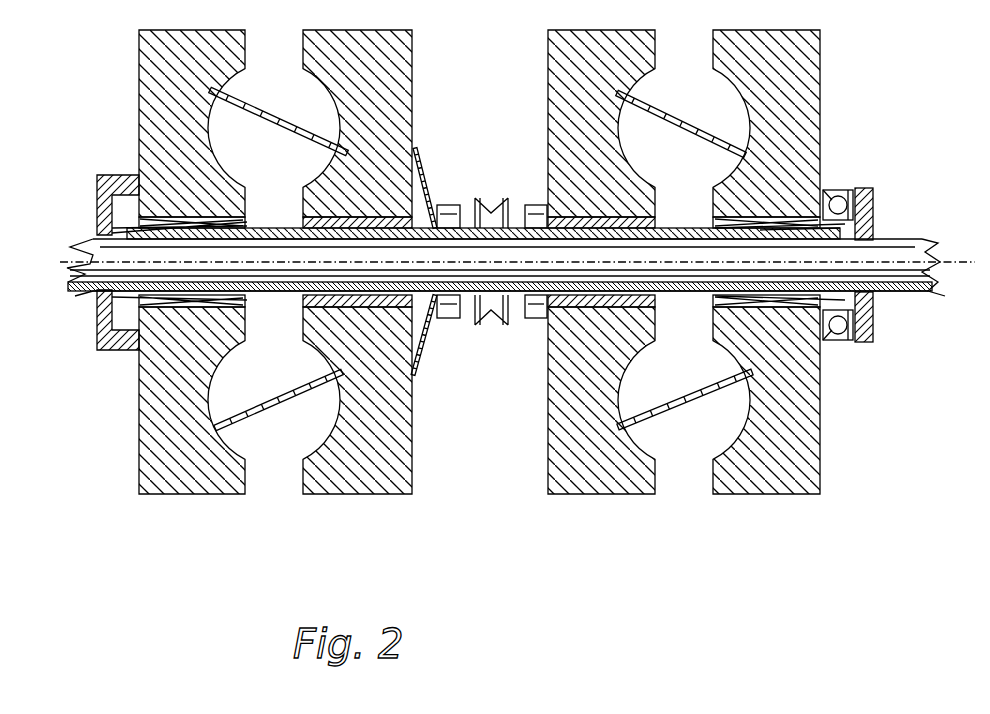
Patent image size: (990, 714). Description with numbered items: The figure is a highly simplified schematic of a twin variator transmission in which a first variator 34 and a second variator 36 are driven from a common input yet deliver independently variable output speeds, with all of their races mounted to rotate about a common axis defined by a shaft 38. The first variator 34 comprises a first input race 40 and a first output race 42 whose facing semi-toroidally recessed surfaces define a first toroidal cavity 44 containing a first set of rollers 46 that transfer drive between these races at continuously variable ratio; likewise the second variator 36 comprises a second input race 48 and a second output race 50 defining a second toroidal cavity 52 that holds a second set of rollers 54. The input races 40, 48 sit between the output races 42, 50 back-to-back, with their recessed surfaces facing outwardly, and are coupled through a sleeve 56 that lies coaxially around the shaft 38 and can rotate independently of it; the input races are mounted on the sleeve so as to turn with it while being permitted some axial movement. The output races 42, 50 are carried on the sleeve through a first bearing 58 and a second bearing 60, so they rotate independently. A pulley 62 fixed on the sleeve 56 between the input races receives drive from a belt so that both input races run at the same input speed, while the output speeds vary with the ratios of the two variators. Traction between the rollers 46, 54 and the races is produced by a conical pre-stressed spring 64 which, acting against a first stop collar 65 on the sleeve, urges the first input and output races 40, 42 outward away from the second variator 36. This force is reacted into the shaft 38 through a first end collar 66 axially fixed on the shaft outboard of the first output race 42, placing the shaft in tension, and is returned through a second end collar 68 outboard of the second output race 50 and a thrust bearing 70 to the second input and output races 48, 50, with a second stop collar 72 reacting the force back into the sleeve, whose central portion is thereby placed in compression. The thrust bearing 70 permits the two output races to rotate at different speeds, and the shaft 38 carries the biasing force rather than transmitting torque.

The first variator 34 is at (277, 494).
The second variator 36 is at (683, 484).
The shaft 38 is at (928, 274).
The first input race 40 is at (408, 496).
The first output race 42 is at (210, 496).
The first toroidal cavity 44 is at (240, 376).
The first set of rollers 46 is at (306, 392).
The second input race 48 is at (605, 497).
The second output race 50 is at (808, 497).
The second toroidal cavity 52 is at (682, 385).
The second set of rollers 54 is at (642, 432).
The sleeve 56 is at (693, 298).
The first bearing 58 is at (137, 303).
The second bearing 60 is at (845, 190).
The pulley 62 is at (497, 313).
The pre-stressed spring 64 is at (433, 183).
The first stop collar 65 is at (452, 204).
The first end collar 66 is at (115, 352).
The second end collar 68 is at (876, 226).
The thrust bearing 70 is at (835, 342).
The second stop collar 72 is at (528, 203).